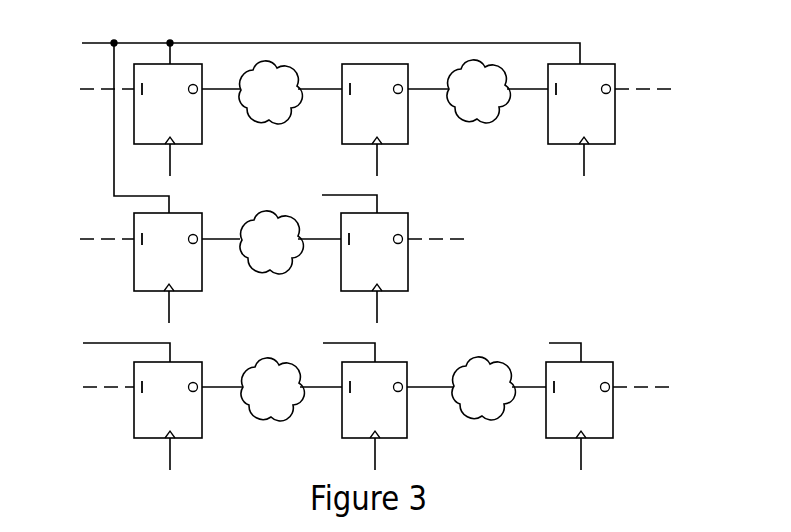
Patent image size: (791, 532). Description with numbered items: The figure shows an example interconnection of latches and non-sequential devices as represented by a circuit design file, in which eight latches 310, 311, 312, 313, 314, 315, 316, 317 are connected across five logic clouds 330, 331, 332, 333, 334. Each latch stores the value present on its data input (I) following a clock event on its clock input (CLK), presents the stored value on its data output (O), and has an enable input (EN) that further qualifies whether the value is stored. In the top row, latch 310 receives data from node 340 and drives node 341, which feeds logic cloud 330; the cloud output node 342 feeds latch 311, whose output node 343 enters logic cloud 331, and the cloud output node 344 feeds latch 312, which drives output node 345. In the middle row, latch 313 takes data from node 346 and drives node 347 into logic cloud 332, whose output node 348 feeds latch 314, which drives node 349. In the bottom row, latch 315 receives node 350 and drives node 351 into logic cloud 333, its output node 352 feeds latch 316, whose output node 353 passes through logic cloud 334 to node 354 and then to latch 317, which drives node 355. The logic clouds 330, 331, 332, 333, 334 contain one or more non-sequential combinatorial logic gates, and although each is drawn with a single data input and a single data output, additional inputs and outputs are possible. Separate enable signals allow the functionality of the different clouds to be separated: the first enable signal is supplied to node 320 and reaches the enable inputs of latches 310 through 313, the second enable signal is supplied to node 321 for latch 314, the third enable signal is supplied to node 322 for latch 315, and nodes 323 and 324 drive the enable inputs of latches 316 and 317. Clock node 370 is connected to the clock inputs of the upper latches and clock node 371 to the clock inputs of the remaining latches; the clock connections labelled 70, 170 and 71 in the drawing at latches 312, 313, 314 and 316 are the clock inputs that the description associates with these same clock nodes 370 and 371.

The latch 310 is at (159, 115).
The latch 311 is at (365, 115).
The latch 312 is at (571, 115).
The latch 313 is at (159, 264).
The latch 314 is at (365, 264).
The latch 315 is at (159, 413).
The latch 316 is at (364, 413).
The latch 317 is at (569, 413).
The logic cloud 330 is at (258, 102).
The logic cloud 331 is at (466, 101).
The logic cloud 332 is at (259, 252).
The logic cloud 333 is at (260, 399).
The logic cloud 334 is at (471, 398).
The sequential node 320 is at (110, 40).
The sequential node 321 is at (357, 193).
The sequential node 322 is at (105, 338).
The sequential node 323 is at (345, 338).
The sequential node 324 is at (573, 340).
The node 340 is at (85, 84).
The node 341 is at (237, 84).
The node 342 is at (335, 85).
The node 343 is at (447, 80).
The node 344 is at (542, 83).
The node 345 is at (663, 82).
The node 346 is at (83, 235).
The node 347 is at (237, 232).
The node 348 is at (327, 232).
The node 349 is at (462, 232).
The node 350 is at (85, 385).
The node 351 is at (237, 382).
The node 352 is at (327, 382).
The node 353 is at (447, 382).
The node 354 is at (540, 382).
The node 355 is at (668, 382).
The clock node 370 is at (171, 163).
The clock node 371 is at (171, 463).
The clock signal line 70 is at (585, 165).
The clock signal line 71 is at (378, 312).
The clock signal line 170 is at (170, 312).